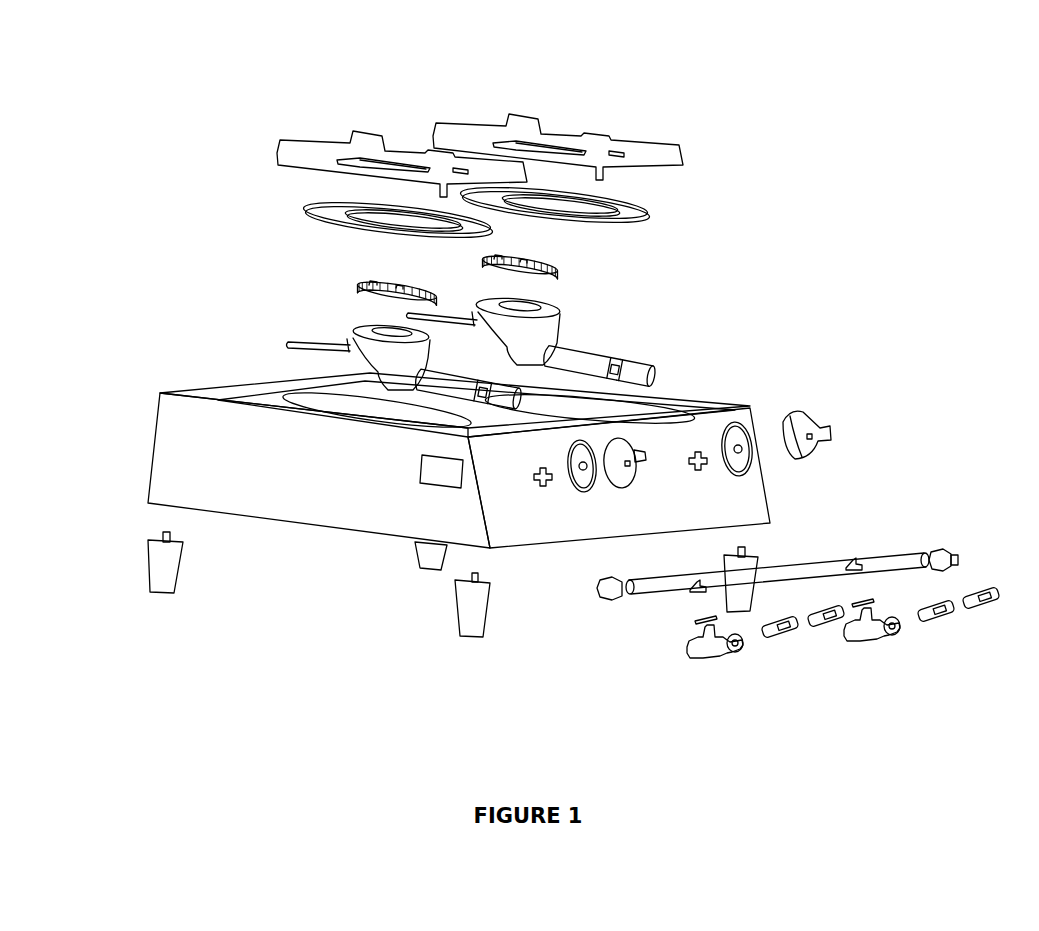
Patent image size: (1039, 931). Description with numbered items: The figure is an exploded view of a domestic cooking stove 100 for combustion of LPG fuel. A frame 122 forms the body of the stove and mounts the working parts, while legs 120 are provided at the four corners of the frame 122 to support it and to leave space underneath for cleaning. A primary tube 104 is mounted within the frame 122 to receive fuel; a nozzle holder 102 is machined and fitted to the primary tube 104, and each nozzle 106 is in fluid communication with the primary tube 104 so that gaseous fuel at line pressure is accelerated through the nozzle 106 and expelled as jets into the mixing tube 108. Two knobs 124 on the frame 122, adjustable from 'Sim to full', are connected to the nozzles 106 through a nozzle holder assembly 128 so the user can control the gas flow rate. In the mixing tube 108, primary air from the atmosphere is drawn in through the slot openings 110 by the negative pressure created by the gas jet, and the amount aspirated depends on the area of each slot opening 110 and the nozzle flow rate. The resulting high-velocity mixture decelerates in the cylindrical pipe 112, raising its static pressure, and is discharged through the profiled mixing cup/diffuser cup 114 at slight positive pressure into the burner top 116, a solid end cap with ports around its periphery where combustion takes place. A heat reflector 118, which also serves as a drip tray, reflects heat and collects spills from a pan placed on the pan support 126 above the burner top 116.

The domestic cooking stove 100 is at (176, 97).
The nozzle holder 102 is at (893, 630).
The primary tube 104 is at (855, 565).
The nozzle 106 is at (715, 648).
The mixing tube 108 is at (573, 357).
The slot opening 110 is at (623, 370).
The cylindrical pipe 112 is at (460, 383).
The mixing cup/diffuser cup 114 is at (352, 333).
The burner top 116 is at (533, 262).
The heat reflector 118 is at (303, 210).
The leg 120 is at (455, 618).
The frame 122 is at (292, 523).
The knob 124 is at (800, 420).
The pan support 126 is at (670, 143).
The nozzle holder assembly 128 is at (645, 613).